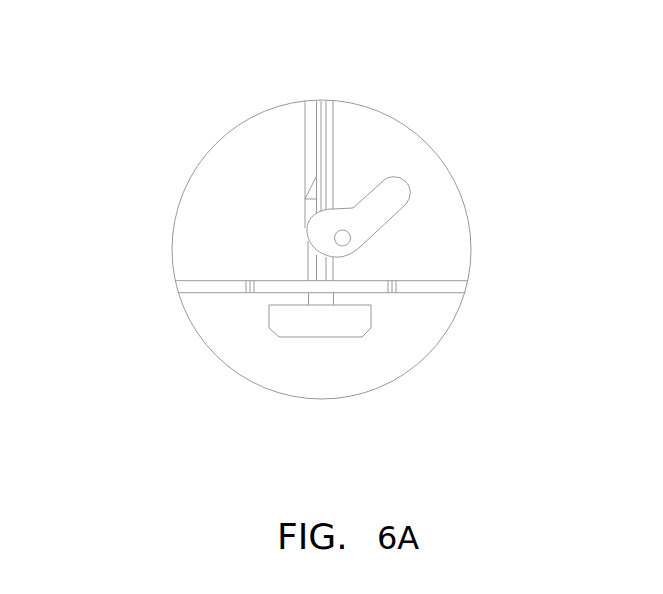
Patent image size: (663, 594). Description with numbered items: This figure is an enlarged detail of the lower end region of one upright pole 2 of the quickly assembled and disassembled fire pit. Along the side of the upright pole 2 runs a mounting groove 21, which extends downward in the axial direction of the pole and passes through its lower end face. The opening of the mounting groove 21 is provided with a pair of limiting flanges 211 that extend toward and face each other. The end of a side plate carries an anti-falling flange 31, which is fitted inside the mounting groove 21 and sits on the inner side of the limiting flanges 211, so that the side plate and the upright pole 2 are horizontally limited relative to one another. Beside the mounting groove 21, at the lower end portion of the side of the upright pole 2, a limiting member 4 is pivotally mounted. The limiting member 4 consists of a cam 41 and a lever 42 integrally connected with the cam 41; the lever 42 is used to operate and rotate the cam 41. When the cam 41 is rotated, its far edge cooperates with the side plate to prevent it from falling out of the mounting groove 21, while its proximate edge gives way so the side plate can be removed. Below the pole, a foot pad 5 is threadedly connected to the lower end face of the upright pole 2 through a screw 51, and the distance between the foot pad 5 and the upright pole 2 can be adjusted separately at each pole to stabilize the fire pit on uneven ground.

The upright pole 2 is at (207, 208).
The anti-falling flange 31 is at (310, 130).
The mounting groove 21 is at (322, 150).
The limiting flange 211 is at (333, 183).
The limiting member 4 is at (448, 220).
The lever 42 is at (388, 199).
The cam 41 is at (351, 239).
The foot pad 5 is at (300, 318).
The screw 51 is at (323, 300).